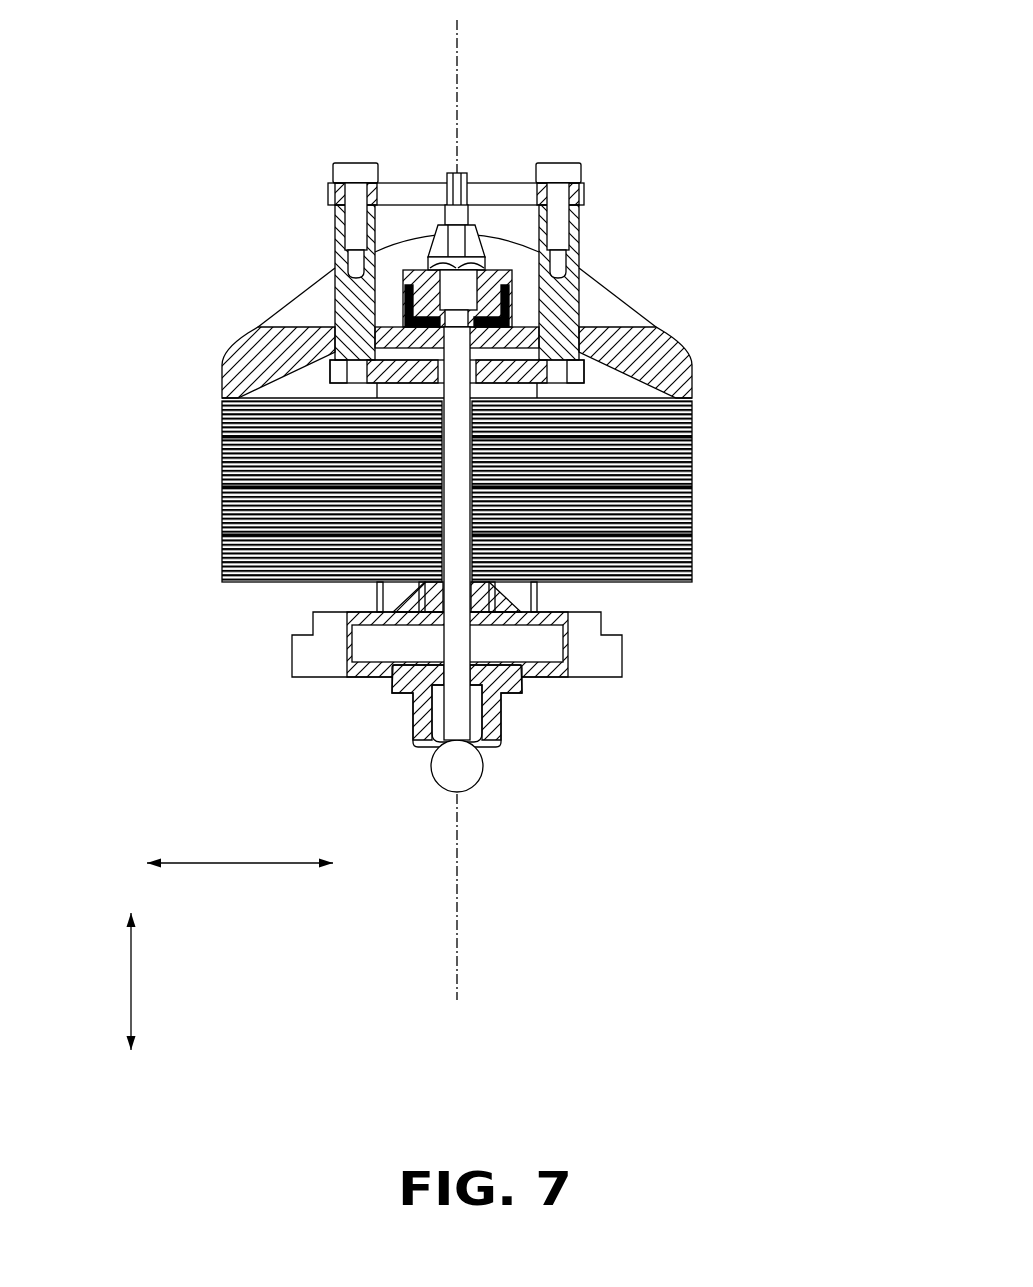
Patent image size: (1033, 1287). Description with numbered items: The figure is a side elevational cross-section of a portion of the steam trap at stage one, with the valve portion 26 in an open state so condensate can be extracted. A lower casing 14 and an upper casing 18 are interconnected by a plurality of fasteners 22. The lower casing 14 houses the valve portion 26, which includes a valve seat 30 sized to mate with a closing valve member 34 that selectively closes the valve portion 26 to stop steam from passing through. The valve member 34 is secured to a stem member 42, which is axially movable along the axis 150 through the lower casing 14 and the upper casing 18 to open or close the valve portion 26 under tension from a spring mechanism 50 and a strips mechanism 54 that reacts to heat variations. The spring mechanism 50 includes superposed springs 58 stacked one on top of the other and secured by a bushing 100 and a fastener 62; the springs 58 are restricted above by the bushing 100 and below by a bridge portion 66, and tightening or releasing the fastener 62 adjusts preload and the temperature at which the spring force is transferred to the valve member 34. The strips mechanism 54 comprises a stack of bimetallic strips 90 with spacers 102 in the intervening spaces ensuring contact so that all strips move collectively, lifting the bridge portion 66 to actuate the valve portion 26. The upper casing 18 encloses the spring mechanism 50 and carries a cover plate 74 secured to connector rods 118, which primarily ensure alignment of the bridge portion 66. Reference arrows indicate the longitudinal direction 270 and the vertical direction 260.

The axis 150 is at (460, 40).
The spring mechanism 50 is at (238, 215).
The cover plate 74 is at (518, 182).
The springs 58 is at (335, 163).
The fastener 62 is at (483, 247).
The bushing 100 is at (512, 276).
The connector rods 118 is at (582, 313).
The upper casing 18 is at (560, 342).
The bridge portion 66 is at (692, 352).
The bimetallic strips 90 is at (462, 486).
The spacers 102 is at (222, 438).
The fasteners 22 is at (380, 588).
The lower casing 14 is at (590, 658).
The valve seat 30 is at (520, 702).
The stem member 42 is at (440, 620).
The strips mechanism 54 is at (295, 752).
The valve portion 26 is at (528, 758).
The valve member 34 is at (470, 767).
The arrow 270 is at (218, 863).
The arrow 260 is at (131, 987).